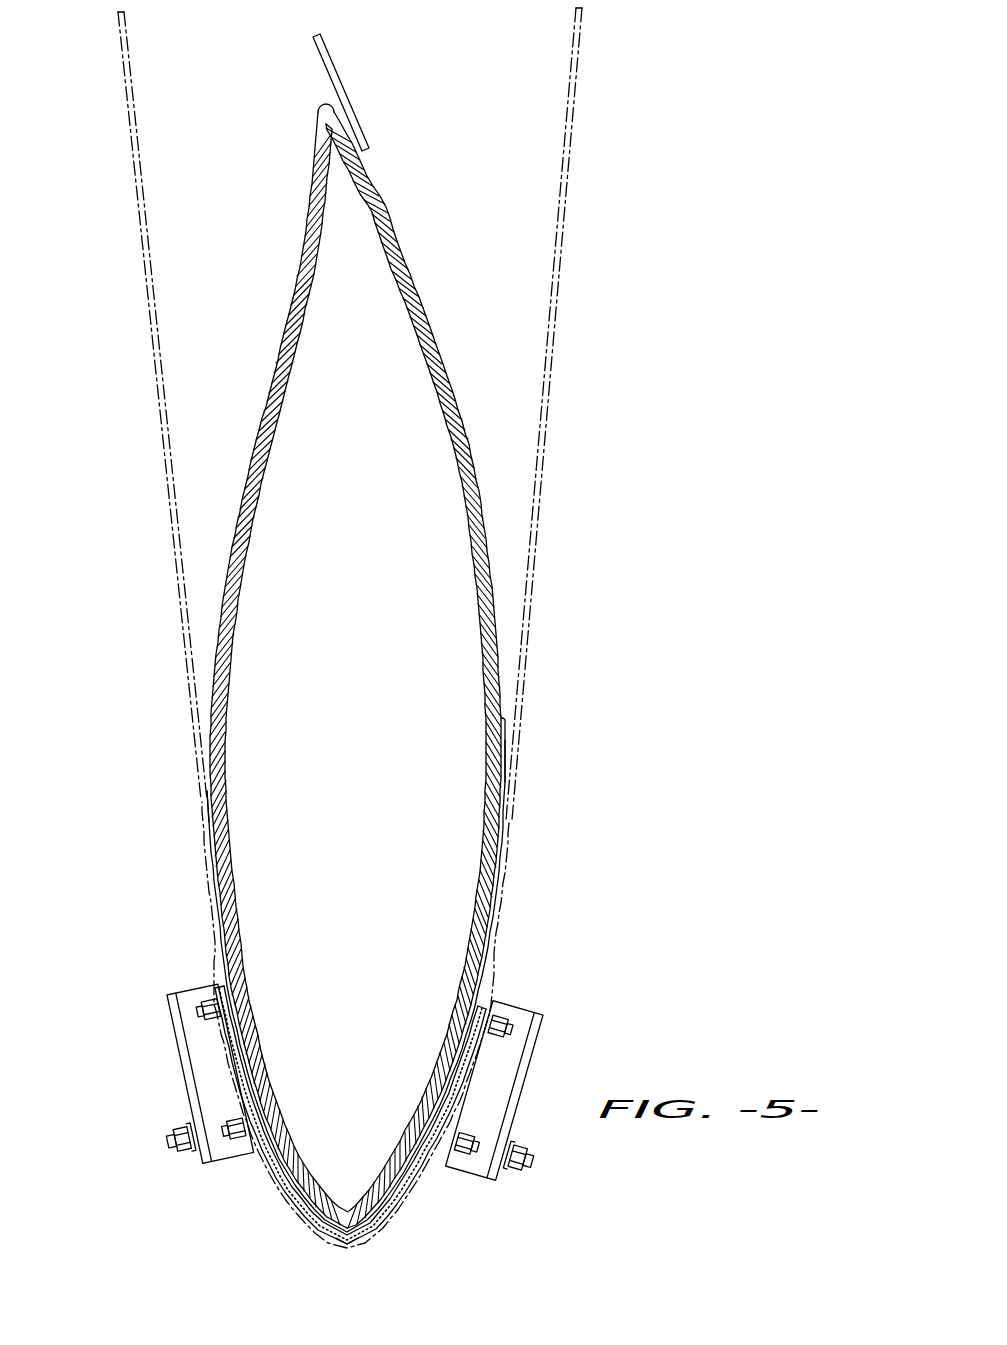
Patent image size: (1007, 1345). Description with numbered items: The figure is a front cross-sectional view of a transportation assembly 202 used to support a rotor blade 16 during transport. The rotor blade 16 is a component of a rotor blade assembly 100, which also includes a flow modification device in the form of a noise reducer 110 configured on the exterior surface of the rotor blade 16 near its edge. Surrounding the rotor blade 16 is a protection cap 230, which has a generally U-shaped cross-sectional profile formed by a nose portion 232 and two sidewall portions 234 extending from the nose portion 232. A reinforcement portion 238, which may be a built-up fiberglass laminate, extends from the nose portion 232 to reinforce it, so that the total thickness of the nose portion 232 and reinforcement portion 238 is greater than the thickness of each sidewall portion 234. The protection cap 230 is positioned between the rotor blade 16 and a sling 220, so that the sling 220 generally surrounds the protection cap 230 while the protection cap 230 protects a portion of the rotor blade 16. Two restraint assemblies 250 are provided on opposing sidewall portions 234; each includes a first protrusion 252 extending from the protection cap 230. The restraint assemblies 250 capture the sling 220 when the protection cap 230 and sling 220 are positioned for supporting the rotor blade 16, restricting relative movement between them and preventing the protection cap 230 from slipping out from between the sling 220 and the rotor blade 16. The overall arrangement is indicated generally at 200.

The rotor blade 16 is at (426, 316).
The rotor blade assembly 100 is at (405, 212).
The noise reducer 110 is at (352, 64).
The fixture assembly 200 is at (708, 193).
The transportation assembly 202 is at (640, 830).
The sling 220 is at (544, 425).
The protection cap 230 is at (516, 750).
The nose portion 232 is at (398, 1204).
The sidewall portions 234 is at (506, 780).
The reinforcement portion 238 is at (348, 1240).
The restraint assembly 250 is at (190, 970).
The first protrusion 252 is at (180, 1056).